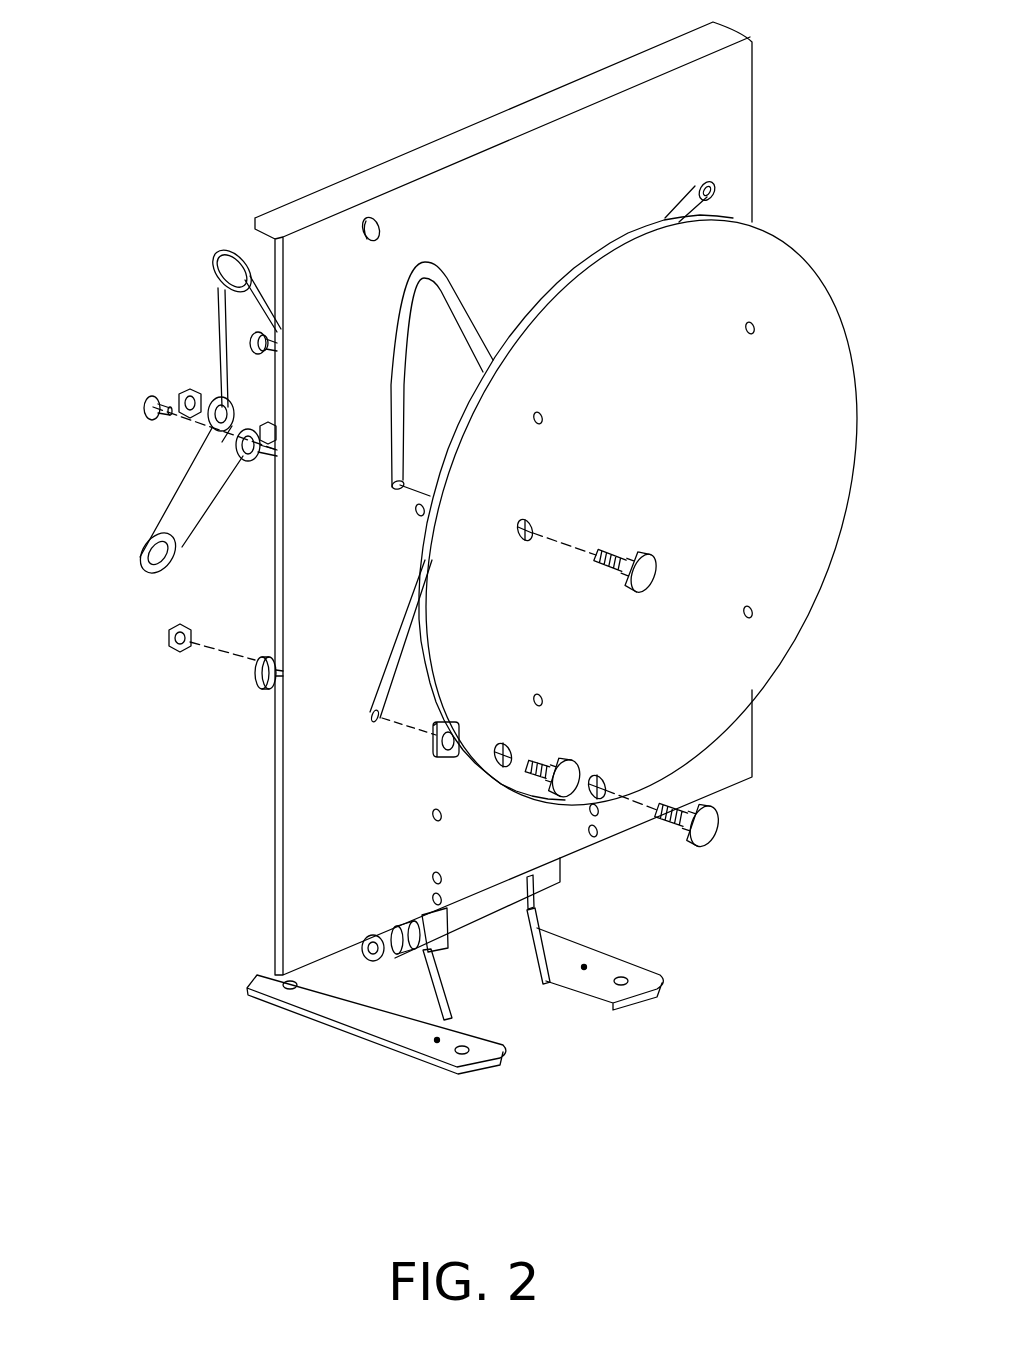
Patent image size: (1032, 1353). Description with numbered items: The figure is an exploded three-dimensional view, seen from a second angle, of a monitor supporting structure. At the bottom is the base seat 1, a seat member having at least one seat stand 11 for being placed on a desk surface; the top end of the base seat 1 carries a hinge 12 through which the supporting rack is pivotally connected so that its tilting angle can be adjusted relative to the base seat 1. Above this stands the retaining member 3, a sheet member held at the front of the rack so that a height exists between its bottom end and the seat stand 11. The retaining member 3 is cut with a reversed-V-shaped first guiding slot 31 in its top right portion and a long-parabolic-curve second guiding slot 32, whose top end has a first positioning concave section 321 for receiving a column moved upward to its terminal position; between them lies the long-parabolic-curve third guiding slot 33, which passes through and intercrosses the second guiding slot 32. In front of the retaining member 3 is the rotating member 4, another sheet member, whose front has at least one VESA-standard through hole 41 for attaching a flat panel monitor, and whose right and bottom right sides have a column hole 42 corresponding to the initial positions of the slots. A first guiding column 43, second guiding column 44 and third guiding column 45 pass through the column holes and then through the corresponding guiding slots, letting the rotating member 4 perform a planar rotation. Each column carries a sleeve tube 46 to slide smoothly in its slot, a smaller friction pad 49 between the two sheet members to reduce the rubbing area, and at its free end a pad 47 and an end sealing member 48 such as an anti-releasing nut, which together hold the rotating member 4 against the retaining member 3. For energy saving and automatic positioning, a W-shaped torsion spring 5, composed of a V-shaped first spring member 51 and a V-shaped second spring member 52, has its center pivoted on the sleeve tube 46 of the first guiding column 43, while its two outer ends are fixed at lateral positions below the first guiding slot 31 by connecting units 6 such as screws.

The base seat 1 is at (477, 917).
The seat stand 11 is at (350, 1015).
The hinge 12 is at (428, 955).
The retaining member 3 is at (330, 267).
The first guiding slot 31 is at (441, 280).
The second guiding slot 32 is at (670, 214).
The first positioning concave section 321 is at (713, 178).
The third guiding slot 33 is at (403, 615).
The rotating member 4 is at (823, 325).
The through hole 41 is at (752, 611).
The column hole 42 is at (503, 764).
The first guiding column 43 is at (648, 577).
The second guiding column 44 is at (710, 832).
The third guiding column 45 is at (558, 790).
The sleeve tube 46 is at (267, 457).
The pad 47 is at (260, 677).
The end sealing member 48 is at (167, 642).
The friction pad 49 is at (433, 733).
The torsion spring 5 is at (141, 367).
The first spring member 51 is at (163, 498).
The second spring member 52 is at (215, 336).
The connecting unit 6 is at (180, 402).